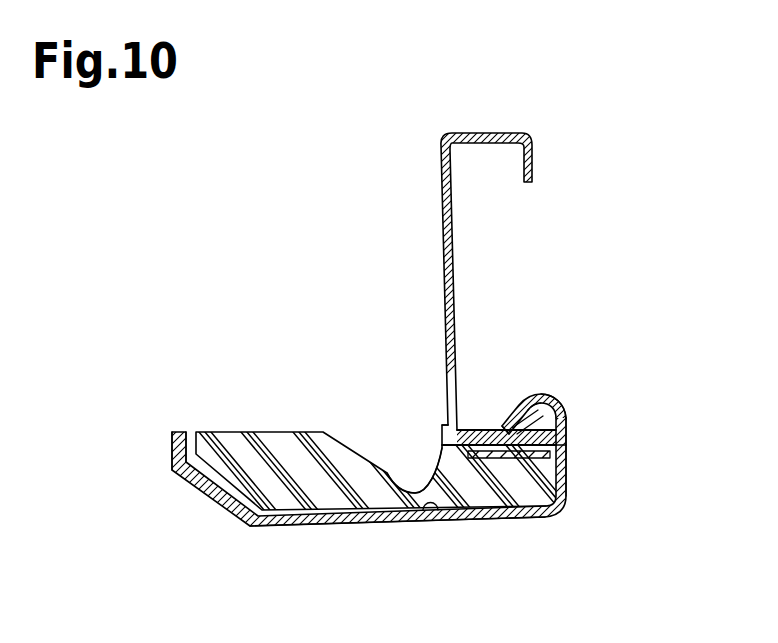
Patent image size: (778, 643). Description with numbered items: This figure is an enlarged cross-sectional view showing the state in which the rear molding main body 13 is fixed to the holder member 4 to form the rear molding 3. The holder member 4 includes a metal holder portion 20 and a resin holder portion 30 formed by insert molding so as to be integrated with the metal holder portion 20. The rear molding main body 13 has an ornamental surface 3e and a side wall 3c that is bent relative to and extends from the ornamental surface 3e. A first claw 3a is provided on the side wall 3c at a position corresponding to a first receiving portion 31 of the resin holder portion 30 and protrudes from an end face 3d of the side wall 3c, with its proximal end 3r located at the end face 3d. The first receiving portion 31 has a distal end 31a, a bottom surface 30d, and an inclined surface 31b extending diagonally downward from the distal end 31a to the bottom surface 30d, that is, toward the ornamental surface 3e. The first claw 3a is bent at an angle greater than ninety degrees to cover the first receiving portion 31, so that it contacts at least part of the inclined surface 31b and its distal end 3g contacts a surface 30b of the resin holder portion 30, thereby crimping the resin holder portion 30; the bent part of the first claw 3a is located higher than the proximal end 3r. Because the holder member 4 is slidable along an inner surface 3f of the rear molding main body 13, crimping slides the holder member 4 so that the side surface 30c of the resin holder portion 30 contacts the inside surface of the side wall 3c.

The rear molding 3 is at (325, 270).
The rear molding main body 13 is at (180, 432).
The holder member 4 is at (380, 330).
The resin holder portion 30 is at (278, 426).
The metal holder portion 20 is at (447, 388).
The surface of the resin holder portion 30b is at (484, 412).
The first claw 3a is at (511, 408).
The inclined surface 31b is at (522, 414).
The distal end of the first receiving portion 31a is at (532, 418).
The first receiving portion 31 is at (565, 402).
The proximal end of the first claw 3r is at (566, 412).
The end face of the side wall 3d is at (568, 416).
The side wall 3c is at (570, 416).
The side surface of the resin holder portion 30c is at (568, 412).
The bottom surface 30d is at (340, 526).
The inner surface of the rear molding main body 3f is at (425, 515).
The ornamental surface 3e is at (480, 500).
The distal end of the first claw 3g is at (515, 513).